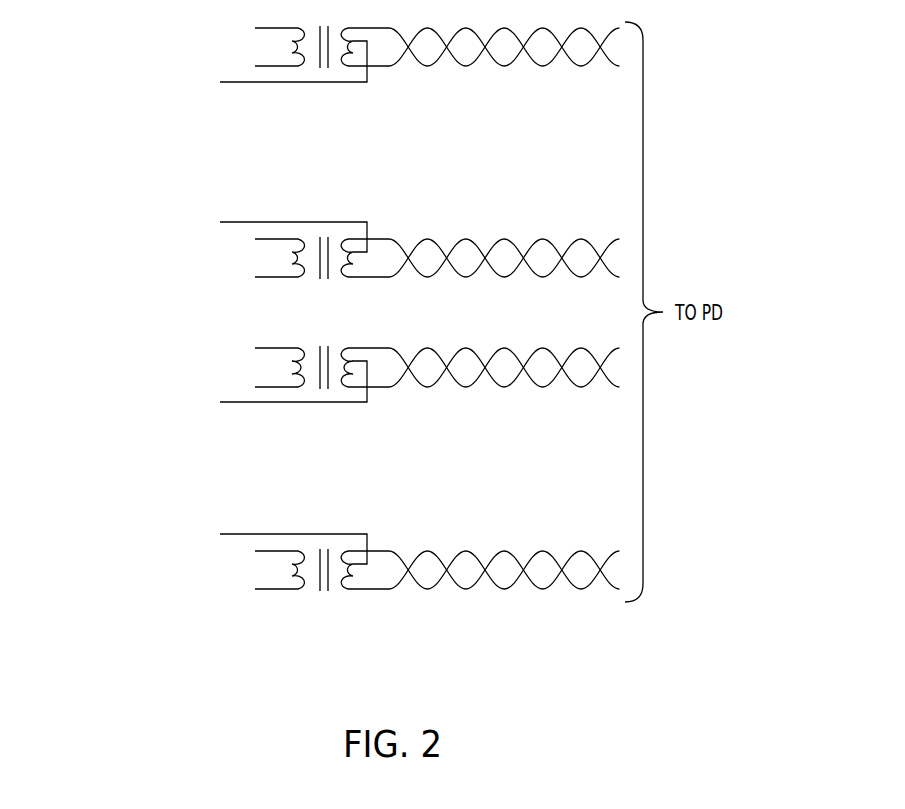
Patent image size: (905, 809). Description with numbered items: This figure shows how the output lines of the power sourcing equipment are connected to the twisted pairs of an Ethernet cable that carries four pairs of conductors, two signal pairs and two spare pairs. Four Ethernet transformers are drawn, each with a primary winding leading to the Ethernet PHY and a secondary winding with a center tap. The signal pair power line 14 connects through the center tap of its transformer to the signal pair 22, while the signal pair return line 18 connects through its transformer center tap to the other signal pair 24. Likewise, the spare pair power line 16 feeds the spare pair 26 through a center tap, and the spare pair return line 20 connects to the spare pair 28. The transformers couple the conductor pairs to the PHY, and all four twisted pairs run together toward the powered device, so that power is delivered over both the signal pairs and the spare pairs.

The signal pair power line 14 is at (287, 222).
The spare pair power line 16 is at (287, 534).
The signal pair return line 18 is at (287, 82).
The spare pair return line 20 is at (287, 402).
The signal pair 22 is at (503, 278).
The signal pair 24 is at (505, 67).
The spare pair 26 is at (502, 549).
The spare pair 28 is at (503, 388).